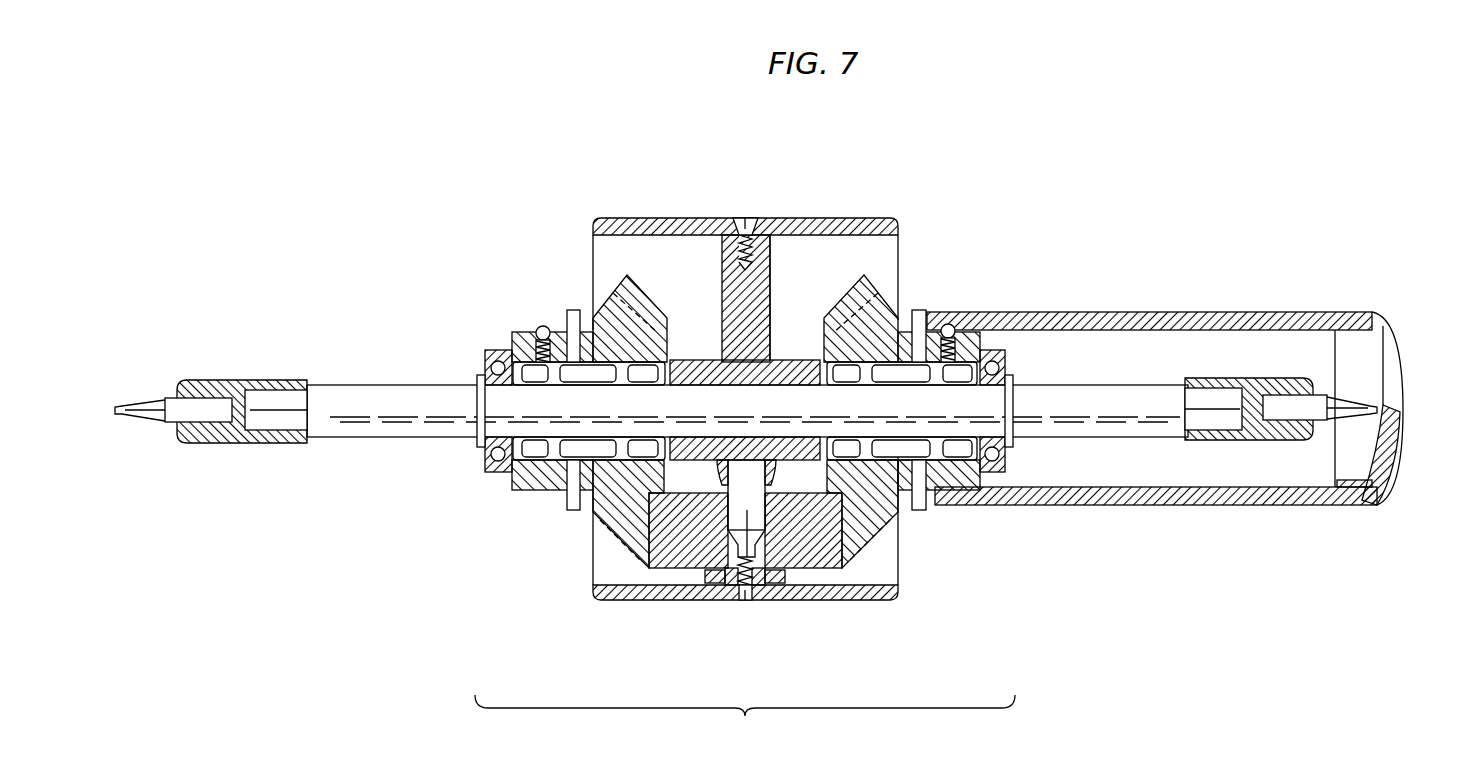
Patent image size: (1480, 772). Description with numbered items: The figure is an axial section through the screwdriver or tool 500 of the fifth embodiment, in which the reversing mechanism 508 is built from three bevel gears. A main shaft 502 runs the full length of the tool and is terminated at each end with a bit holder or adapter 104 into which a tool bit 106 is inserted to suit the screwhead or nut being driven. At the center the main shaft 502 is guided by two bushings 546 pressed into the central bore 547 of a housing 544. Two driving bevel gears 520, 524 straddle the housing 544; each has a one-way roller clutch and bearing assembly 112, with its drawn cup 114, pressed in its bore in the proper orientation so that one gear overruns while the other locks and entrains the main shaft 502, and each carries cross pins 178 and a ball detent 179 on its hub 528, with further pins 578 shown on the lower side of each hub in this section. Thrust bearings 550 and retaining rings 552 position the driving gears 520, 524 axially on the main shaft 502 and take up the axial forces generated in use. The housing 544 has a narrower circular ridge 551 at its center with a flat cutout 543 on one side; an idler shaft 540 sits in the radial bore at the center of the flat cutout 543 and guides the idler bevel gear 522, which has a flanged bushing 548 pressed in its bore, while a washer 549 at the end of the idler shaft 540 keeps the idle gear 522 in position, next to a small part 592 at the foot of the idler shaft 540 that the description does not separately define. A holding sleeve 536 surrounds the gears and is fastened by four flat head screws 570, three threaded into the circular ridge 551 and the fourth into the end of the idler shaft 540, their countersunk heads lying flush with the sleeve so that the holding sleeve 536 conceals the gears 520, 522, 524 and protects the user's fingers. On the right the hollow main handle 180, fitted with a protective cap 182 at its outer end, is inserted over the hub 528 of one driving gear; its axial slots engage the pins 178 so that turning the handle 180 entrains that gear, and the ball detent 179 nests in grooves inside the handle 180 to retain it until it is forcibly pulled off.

The screwdriver or tool 500 is at (1092, 216).
The main shaft 502 is at (330, 390).
The bit holder or adapter 104 is at (207, 380).
The tool bit 106 is at (162, 392).
The one-way roller clutch and bearing assembly 112 is at (540, 458).
The drawn cup 114 is at (600, 505).
The radial pins 178 is at (572, 310).
The ball detent 179 is at (538, 328).
The main handle 180 is at (1350, 313).
The protective cap 182 is at (1398, 463).
The reversing mechanism 508 is at (745, 723).
The bevel gear 520 is at (606, 300).
The idler bevel gear 522 is at (662, 545).
The bevel gear 524 is at (898, 312).
The hub 528 is at (545, 340).
The holding sleeve 536 is at (622, 601).
The idler shaft 540 is at (760, 575).
The flat cutout 543 is at (805, 520).
The housing 544 is at (797, 360).
The bushings 546 is at (720, 383).
The central bore 547 is at (722, 362).
The flanged bushing 548 is at (780, 572).
The washer 549 is at (705, 582).
The thrust bearings 550 is at (498, 350).
The circular ridge 551 is at (752, 228).
The retaining rings 552 is at (477, 378).
The flat head screws 570 is at (735, 222).
The lower pin 578 is at (568, 512).
The bushing 592 is at (732, 582).